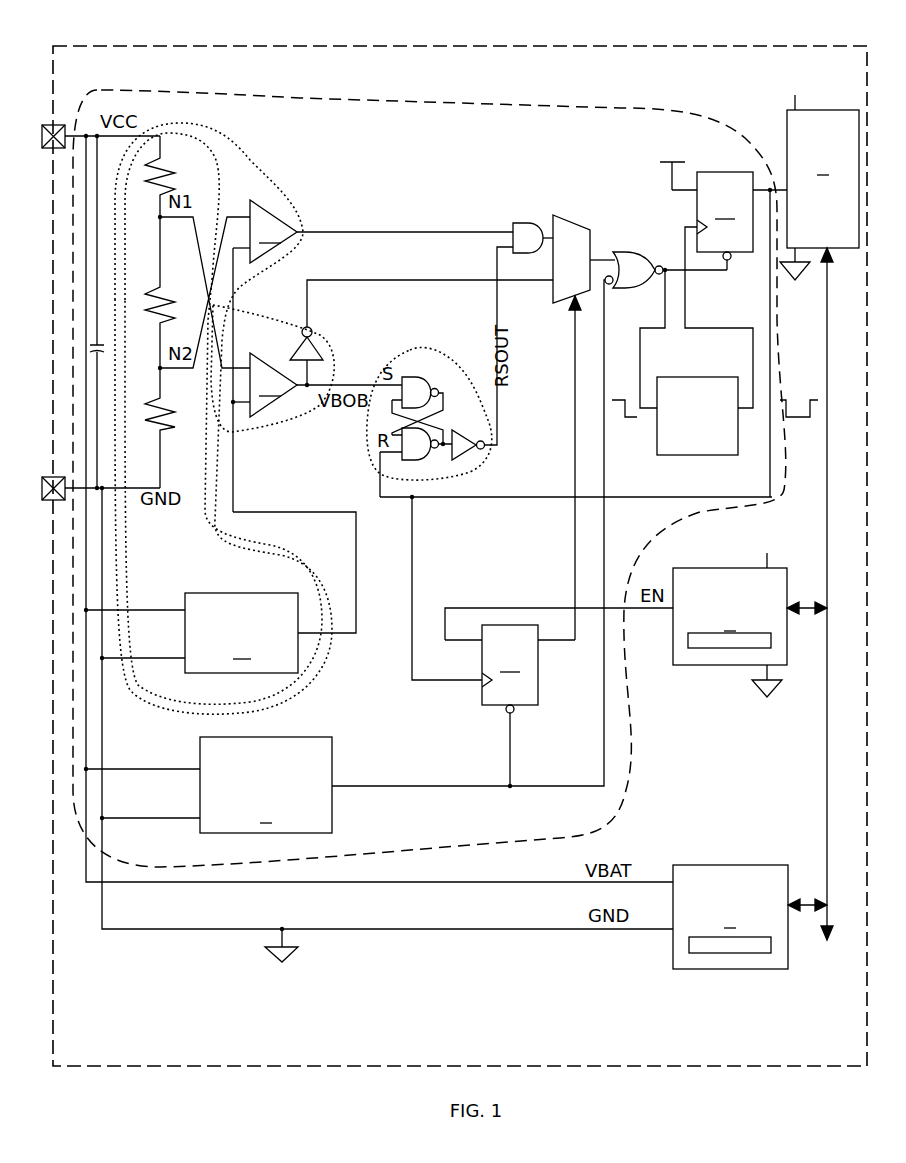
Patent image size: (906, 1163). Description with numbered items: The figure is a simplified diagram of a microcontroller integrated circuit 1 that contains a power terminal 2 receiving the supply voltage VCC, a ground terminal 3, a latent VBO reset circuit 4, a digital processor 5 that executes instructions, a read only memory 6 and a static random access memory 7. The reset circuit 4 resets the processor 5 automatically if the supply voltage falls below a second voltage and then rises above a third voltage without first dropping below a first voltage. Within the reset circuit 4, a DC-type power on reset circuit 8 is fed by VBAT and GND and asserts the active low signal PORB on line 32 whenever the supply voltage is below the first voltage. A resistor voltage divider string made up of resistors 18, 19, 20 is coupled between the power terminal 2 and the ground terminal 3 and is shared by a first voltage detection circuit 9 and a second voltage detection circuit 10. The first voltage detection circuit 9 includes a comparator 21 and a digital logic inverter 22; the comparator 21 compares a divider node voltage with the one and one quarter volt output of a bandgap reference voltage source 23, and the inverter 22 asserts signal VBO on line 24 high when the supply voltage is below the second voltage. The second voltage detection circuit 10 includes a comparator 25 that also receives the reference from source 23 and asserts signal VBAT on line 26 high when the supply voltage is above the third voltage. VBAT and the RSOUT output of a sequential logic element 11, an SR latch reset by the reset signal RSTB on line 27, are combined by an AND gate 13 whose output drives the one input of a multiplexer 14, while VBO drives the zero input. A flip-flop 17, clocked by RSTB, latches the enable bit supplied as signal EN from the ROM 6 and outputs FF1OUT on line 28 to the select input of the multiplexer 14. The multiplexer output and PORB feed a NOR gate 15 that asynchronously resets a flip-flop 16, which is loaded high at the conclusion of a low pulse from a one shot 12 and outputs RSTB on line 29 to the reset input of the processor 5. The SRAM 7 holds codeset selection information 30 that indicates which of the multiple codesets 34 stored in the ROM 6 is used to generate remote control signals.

The microcontroller integrated circuit 1 is at (683, 46).
The power terminal 2 is at (47, 128).
The ground terminal 3 is at (47, 480).
The latent VBO reset circuit 4 is at (161, 94).
The digital processor 5 is at (815, 175).
The read only memory 6 is at (750, 613).
The static random access memory 7 is at (750, 917).
The power on reset circuit 8 is at (208, 785).
The first voltage detection circuit 9 is at (331, 352).
The second voltage detection circuit 10 is at (259, 188).
The sequential logic element 11 is at (432, 358).
The one shot 12 is at (697, 376).
The AND gate 13 is at (522, 222).
The multiplexer 14 is at (570, 219).
The NOR gate 15 is at (630, 250).
The flip-flop 16 is at (703, 199).
The flip-flop 17 is at (559, 697).
The resistor 18 is at (174, 176).
The resistor 19 is at (168, 292).
The resistor 20 is at (175, 428).
The comparator 21 is at (264, 385).
The digital logic inverter 22 is at (296, 354).
The reference voltage source 23 is at (220, 581).
The line 24 is at (478, 278).
The comparator 25 is at (265, 231).
The line 26 is at (486, 231).
The line 27 is at (540, 496).
The line 28 is at (573, 383).
The line 29 is at (773, 187).
The codeset selection information 30 is at (712, 953).
The line 32 is at (543, 786).
The codesets 34 is at (728, 648).